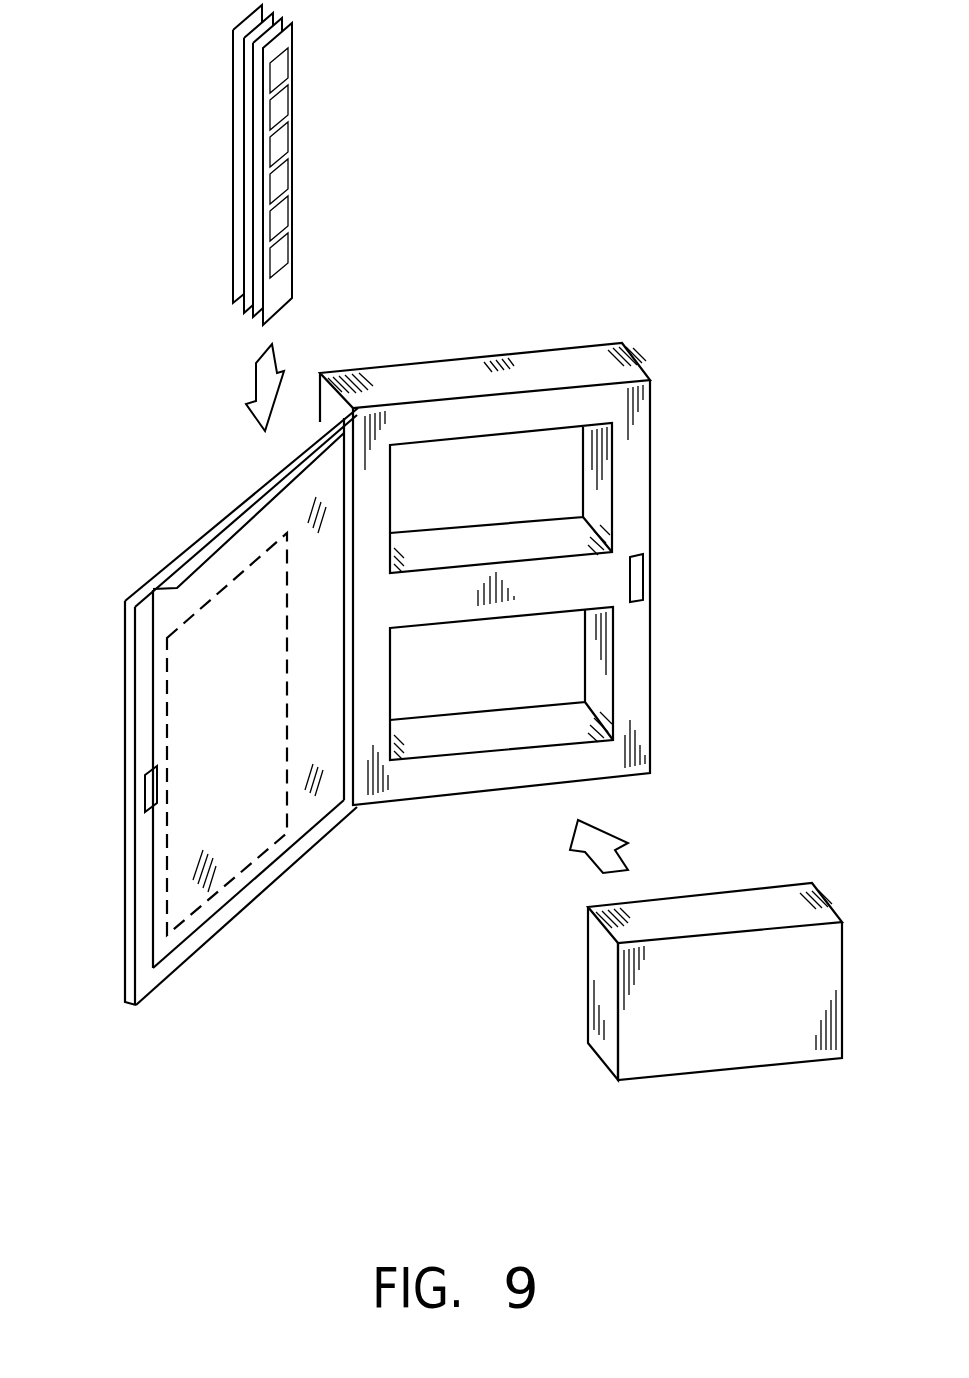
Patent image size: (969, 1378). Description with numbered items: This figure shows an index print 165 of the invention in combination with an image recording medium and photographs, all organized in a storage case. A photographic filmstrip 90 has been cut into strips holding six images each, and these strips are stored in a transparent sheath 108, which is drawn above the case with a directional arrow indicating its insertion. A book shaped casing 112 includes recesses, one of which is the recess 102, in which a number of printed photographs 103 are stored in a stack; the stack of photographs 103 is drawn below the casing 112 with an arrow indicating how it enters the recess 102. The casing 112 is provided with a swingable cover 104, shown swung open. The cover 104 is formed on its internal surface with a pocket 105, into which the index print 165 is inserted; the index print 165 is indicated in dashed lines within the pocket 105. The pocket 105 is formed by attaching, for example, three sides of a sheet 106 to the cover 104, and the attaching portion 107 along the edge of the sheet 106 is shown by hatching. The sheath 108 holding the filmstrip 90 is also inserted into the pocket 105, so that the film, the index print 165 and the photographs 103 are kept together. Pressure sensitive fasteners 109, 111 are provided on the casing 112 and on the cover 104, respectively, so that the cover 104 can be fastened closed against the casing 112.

The filmstrip 90 is at (282, 233).
The recess 102 is at (476, 721).
The photographs 103 is at (708, 1043).
The cover 104 is at (163, 554).
The pocket 105 is at (221, 543).
The sheet 106 is at (308, 818).
The attaching portion 107 is at (150, 985).
The sheath 108 is at (293, 78).
The pressure sensitive fastener 109 is at (636, 578).
The pressure sensitive fastener 111 is at (150, 802).
The book shaped casing 112 is at (632, 220).
The index print 165 is at (258, 900).